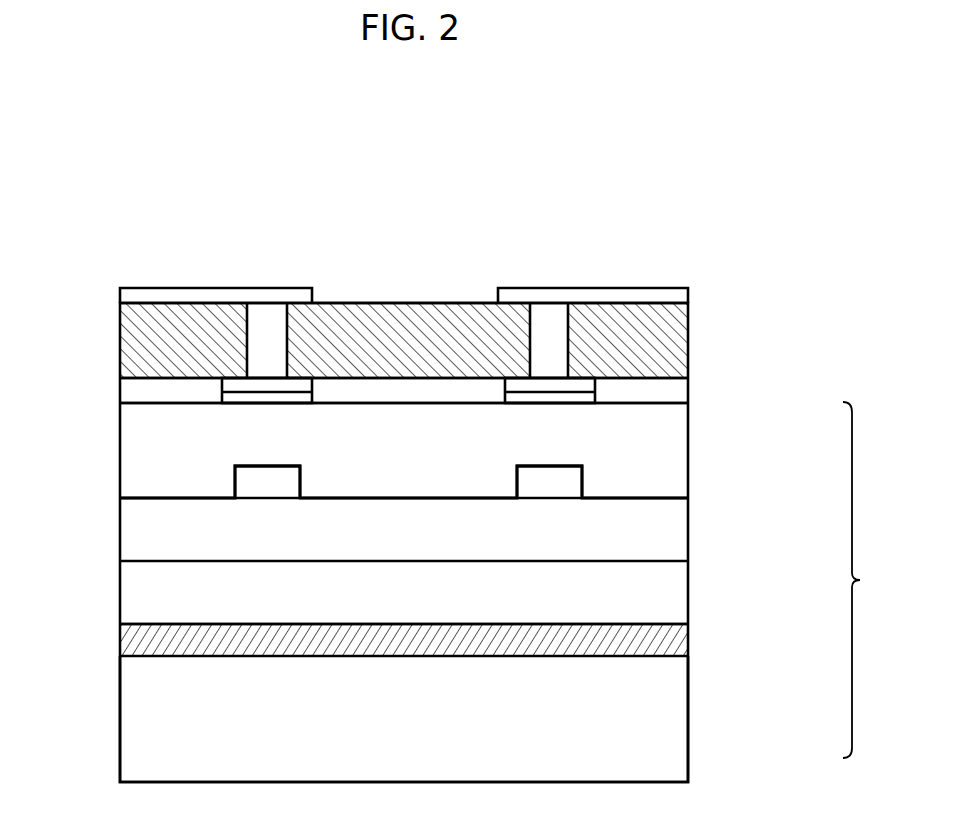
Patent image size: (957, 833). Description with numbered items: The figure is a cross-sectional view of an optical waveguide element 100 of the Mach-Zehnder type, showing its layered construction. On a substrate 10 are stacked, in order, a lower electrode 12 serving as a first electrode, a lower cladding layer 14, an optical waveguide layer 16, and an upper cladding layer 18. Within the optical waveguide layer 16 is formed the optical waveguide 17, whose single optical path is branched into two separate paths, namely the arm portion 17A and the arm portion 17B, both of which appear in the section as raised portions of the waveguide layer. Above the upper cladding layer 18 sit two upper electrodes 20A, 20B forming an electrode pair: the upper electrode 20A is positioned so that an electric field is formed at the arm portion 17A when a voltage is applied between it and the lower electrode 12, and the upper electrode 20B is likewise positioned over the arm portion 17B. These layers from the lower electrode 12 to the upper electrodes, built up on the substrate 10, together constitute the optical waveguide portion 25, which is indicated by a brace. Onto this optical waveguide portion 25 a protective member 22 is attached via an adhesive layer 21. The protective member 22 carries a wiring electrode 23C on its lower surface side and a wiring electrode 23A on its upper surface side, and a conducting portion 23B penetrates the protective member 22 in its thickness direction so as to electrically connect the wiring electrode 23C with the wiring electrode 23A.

The optical waveguide element 100 is at (676, 195).
The substrate 10 is at (680, 710).
The lower electrode 12 is at (680, 638).
The lower cladding layer 14 is at (680, 590).
The optical waveguide layer 16 is at (680, 526).
The optical waveguide 17 is at (361, 494).
The arm portion 17A is at (255, 483).
The arm portion 17B is at (567, 490).
The upper cladding layer 18 is at (680, 452).
The upper electrode 20A is at (224, 395).
The upper electrode 20B is at (640, 403).
The adhesive layer 21 is at (688, 389).
The protective member 22 is at (688, 327).
The wiring electrode 23A is at (173, 298).
The conducting portion 23B is at (252, 323).
The wiring electrode 23C is at (235, 380).
The optical waveguide portion 25 is at (873, 580).